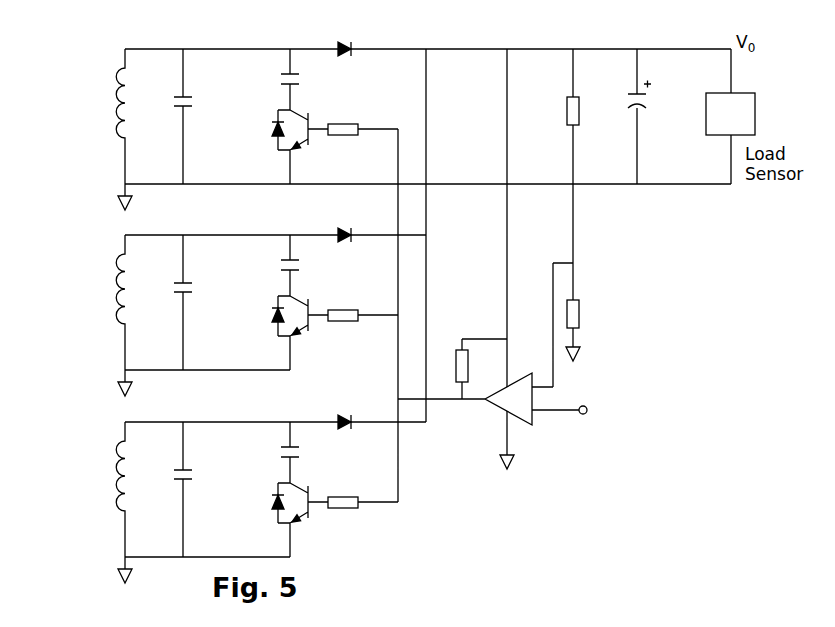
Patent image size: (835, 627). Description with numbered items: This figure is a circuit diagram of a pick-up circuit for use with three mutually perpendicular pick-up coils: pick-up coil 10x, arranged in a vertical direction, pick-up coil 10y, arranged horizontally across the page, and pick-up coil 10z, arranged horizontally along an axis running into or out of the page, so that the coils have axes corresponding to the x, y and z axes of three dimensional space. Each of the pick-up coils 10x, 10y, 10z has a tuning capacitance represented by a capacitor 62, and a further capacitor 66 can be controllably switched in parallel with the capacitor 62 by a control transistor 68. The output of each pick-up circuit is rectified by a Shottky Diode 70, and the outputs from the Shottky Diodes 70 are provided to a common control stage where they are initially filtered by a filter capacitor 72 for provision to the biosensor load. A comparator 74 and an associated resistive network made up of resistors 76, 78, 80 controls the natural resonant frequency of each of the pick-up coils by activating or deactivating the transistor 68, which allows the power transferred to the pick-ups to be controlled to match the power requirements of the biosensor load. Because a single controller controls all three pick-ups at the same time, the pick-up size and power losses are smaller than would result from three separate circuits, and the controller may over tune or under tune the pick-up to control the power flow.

The pick-up coil 10x is at (113, 91).
The pick-up coil 10y is at (184, 315).
The pick-up coil 10z is at (184, 502).
The capacitor 62 is at (190, 95).
The further capacitor 66 is at (282, 72).
The control transistor 68 is at (312, 119).
The Shottky Diode 70 is at (338, 46).
The filter capacitor 72 is at (633, 93).
The comparator 74 is at (495, 408).
The resistor 76 is at (567, 110).
The resistor 78 is at (567, 308).
The resistor 80 is at (456, 362).